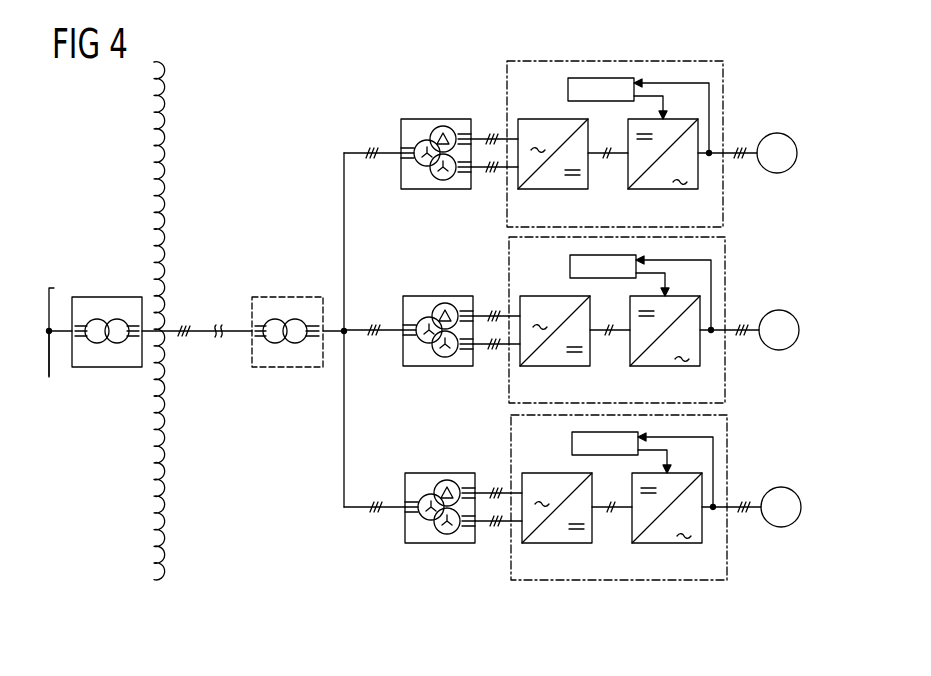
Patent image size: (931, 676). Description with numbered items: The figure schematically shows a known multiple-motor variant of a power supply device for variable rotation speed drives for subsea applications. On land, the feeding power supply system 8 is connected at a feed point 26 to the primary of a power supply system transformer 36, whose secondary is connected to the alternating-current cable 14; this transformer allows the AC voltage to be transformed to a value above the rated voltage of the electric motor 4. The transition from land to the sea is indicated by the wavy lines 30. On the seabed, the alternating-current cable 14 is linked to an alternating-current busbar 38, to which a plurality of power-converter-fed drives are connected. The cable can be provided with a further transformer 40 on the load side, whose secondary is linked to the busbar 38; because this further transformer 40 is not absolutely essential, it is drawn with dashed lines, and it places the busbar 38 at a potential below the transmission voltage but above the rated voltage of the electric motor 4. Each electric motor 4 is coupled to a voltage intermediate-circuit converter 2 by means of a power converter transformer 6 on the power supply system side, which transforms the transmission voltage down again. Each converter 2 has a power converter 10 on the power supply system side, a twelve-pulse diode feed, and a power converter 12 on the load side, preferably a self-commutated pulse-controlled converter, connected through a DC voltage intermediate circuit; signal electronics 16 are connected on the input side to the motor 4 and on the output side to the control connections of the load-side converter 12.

The voltage intermediate-circuit converter 2 is at (723, 213).
The electric motor 4 is at (777, 133).
The power converter transformer 6 is at (436, 119).
The feeding power supply system 8 is at (49, 288).
The power converter on the power supply system side 10 is at (518, 178).
The power converter on the load side 12 is at (697, 173).
The alternating-current cable 14 is at (237, 328).
The signal electronics 16 is at (603, 78).
The feed point 26 is at (49, 335).
The wavy lines 30 is at (165, 447).
The power supply system transformer 36 is at (107, 297).
The alternating-current busbar 38 is at (343, 190).
The further transformer 40 is at (286, 297).